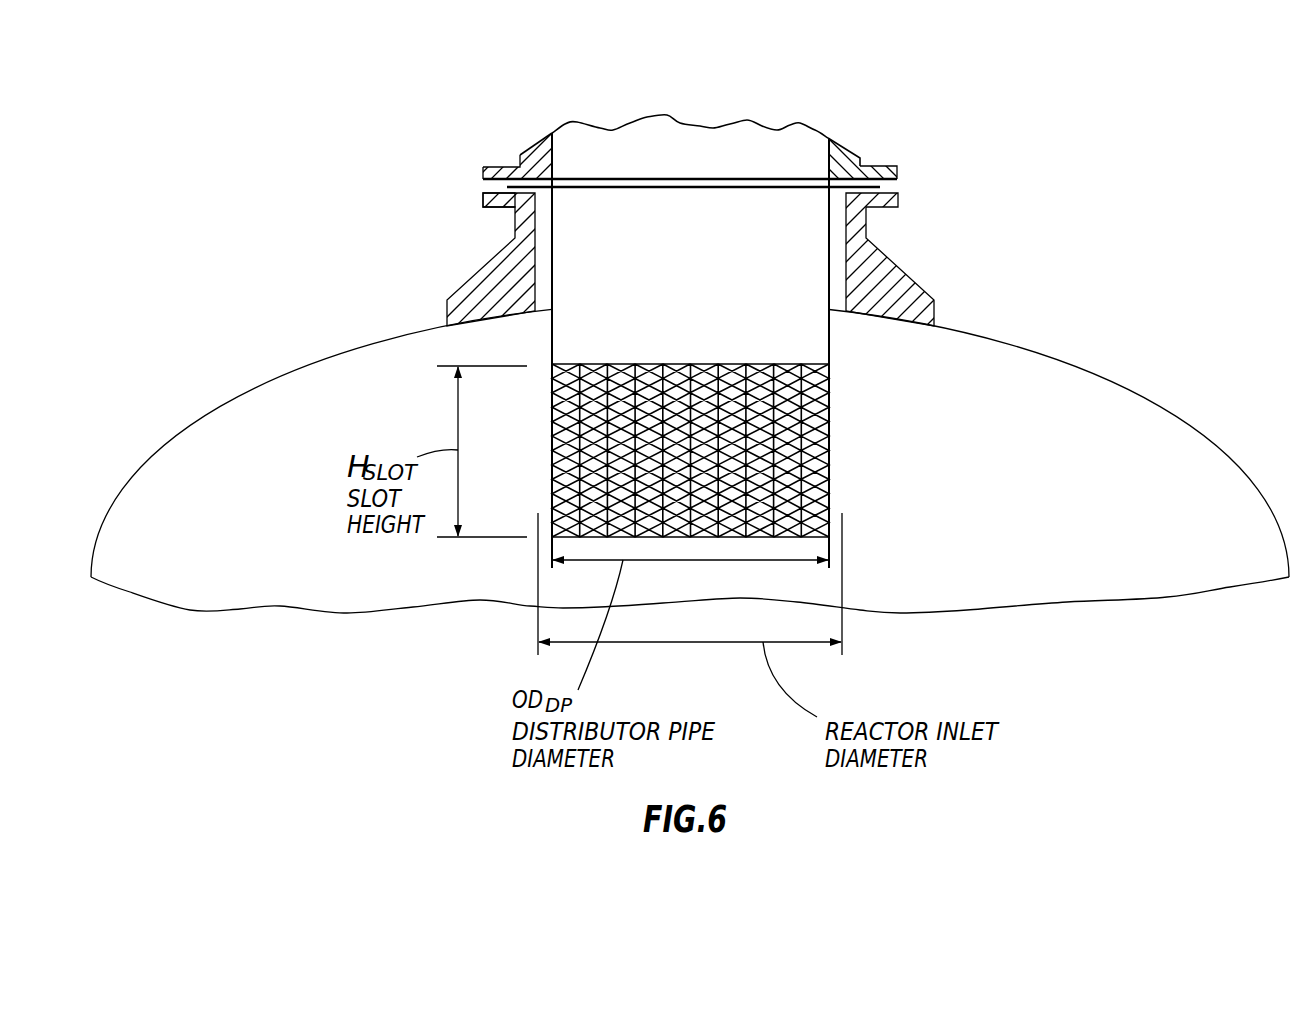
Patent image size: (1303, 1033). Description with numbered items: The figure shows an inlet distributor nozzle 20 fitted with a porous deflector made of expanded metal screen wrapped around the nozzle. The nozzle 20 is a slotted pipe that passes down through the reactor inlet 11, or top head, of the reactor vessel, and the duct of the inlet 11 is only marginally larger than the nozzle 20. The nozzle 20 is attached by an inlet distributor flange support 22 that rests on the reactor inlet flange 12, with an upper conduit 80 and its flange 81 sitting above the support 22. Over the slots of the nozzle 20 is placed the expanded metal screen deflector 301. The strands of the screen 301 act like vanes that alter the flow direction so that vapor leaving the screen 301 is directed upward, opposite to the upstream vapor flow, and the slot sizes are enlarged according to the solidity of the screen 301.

The reactor inlet 11 is at (440, 327).
The reactor inlet flange 12 is at (478, 192).
The inlet distributor nozzle 20 is at (835, 340).
The inlet distributor flange support 22 is at (883, 186).
The upper conduit 80 is at (782, 146).
The upper flange 81 is at (902, 165).
The expanded metal screen deflector 301 is at (840, 426).